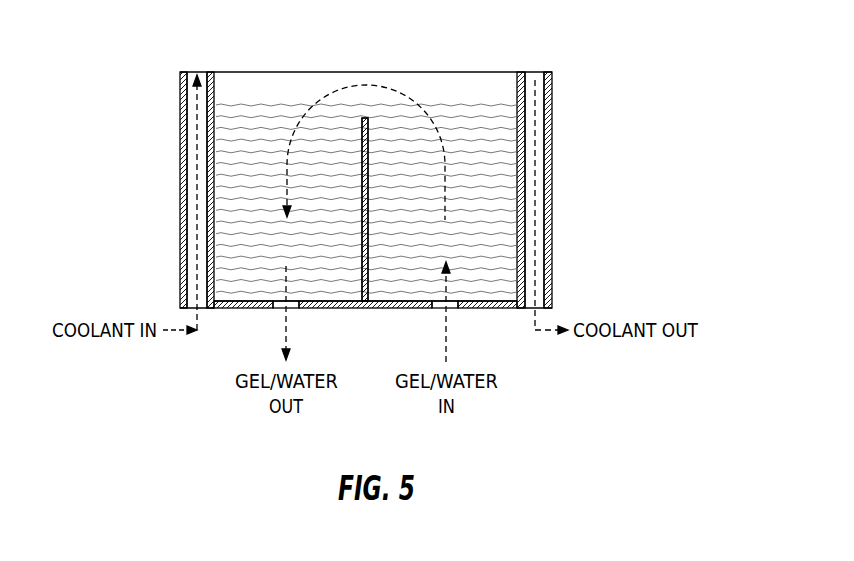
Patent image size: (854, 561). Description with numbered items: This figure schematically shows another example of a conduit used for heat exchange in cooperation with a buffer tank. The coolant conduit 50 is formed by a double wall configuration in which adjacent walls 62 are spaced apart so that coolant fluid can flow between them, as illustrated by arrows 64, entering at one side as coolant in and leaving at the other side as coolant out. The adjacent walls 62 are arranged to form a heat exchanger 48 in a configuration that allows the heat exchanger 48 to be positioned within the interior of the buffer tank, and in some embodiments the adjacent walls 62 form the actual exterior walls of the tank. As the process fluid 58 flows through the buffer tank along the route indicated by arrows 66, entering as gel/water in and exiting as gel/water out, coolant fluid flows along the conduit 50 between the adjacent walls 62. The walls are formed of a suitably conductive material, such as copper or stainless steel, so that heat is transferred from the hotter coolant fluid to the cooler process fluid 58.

The heat exchanger 48 is at (552, 125).
The coolant conduit 50 is at (181, 195).
The process fluid 58 is at (455, 105).
The adjacent walls 62 is at (209, 72).
The arrows indicating coolant fluid flow 64 is at (197, 116).
The arrows indicating process fluid route 66 is at (358, 86).